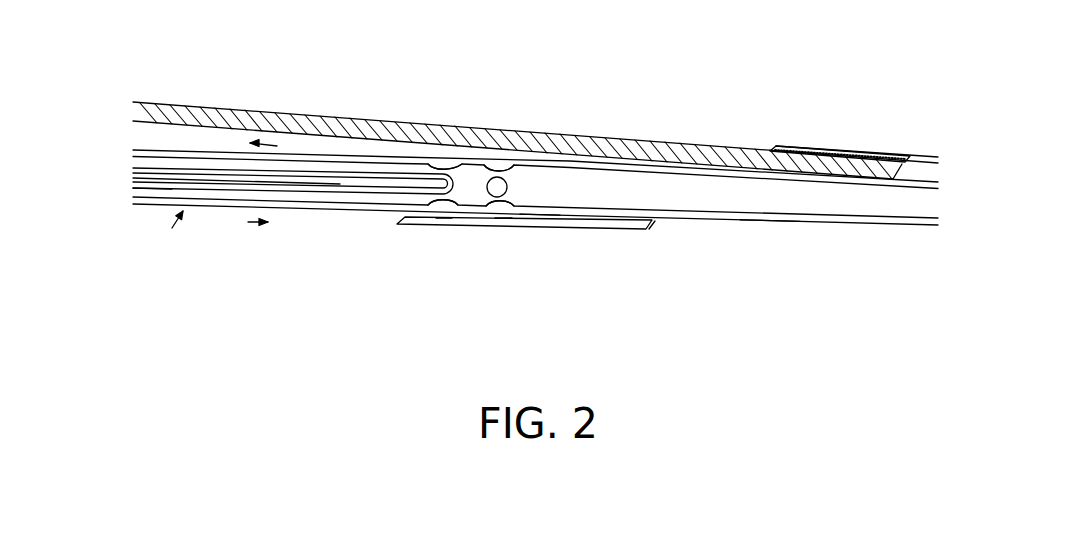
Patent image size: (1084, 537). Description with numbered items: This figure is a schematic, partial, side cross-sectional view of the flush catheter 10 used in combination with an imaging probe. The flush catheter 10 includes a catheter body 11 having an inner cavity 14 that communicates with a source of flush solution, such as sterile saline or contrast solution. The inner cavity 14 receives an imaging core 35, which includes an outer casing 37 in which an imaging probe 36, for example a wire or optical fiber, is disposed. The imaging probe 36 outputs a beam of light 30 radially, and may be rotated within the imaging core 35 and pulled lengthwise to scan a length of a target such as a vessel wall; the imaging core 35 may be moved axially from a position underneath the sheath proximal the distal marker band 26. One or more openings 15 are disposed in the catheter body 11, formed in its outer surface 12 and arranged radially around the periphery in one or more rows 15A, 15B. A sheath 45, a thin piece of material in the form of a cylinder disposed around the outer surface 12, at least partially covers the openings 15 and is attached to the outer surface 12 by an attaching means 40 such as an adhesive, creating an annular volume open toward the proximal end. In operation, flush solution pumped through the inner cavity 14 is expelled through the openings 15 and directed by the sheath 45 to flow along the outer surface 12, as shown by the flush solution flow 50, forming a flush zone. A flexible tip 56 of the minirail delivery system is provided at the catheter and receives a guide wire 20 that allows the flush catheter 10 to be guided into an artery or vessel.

The flush catheter 10 is at (161, 236).
The catheter body 11 is at (182, 206).
The outer surface 12 is at (773, 222).
The inner cavity 14 is at (675, 200).
The openings 15 is at (443, 168).
The row of openings 15A is at (445, 218).
The row of openings 15B is at (502, 218).
The guide wire 20 is at (555, 134).
The distal marker band 26 is at (218, 206).
The beam of light 30 is at (333, 188).
The imaging core 35 is at (383, 190).
The imaging probe 36 is at (363, 180).
The outer casing 37 is at (170, 189).
The attaching means 40 is at (610, 217).
The sheath 45 is at (533, 228).
The flush solution flow 50 is at (277, 146).
The flexible tip 56 is at (817, 145).